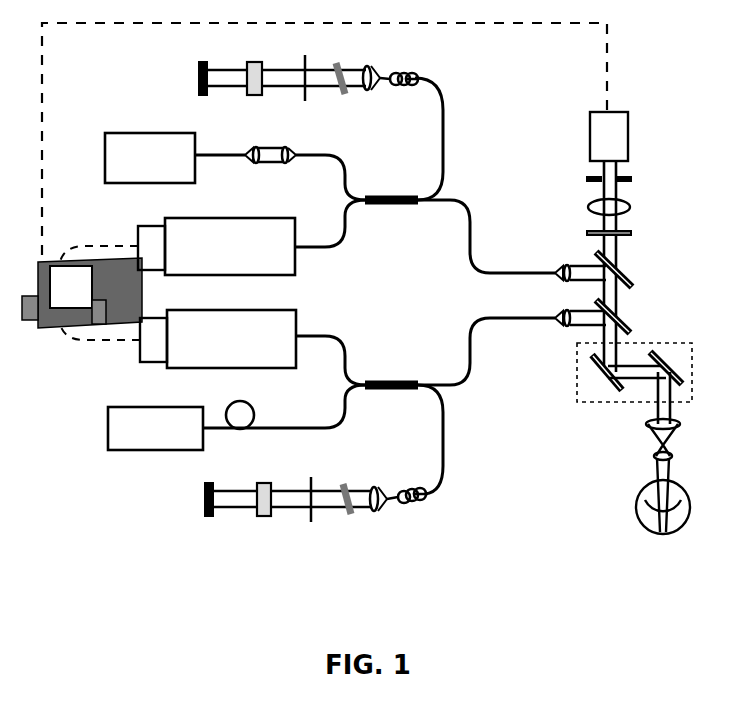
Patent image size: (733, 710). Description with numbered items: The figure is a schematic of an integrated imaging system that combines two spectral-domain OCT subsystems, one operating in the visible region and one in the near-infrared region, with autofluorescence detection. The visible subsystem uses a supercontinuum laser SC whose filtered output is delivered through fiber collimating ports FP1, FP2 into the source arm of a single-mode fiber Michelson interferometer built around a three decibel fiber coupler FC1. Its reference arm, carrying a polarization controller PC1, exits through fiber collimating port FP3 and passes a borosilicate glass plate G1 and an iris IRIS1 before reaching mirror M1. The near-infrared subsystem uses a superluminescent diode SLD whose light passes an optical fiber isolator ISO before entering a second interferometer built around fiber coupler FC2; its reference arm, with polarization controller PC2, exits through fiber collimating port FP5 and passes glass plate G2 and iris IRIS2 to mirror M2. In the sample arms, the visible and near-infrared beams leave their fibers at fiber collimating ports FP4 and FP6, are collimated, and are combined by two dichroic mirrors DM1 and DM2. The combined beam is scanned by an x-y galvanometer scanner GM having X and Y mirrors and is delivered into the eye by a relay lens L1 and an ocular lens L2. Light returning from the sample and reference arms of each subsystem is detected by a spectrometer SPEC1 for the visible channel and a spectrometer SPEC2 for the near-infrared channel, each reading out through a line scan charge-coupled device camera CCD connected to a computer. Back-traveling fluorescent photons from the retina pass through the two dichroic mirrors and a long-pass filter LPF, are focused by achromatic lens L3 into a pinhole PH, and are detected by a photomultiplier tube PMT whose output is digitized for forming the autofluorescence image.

The mirror M1 is at (209, 66).
The BK-7 glass plate G1 is at (256, 66).
The iris IRIS1 is at (306, 69).
The fiber collimating port FP3 is at (361, 65).
The polarization controller PC1 is at (399, 99).
The supercontinuum laser source SC is at (150, 158).
The fiber collimating port FP1 is at (241, 171).
The fiber collimating port FP2 is at (289, 171).
The spectrometer SPEC1 is at (230, 246).
The line scan charge-coupled device camera CCD is at (155, 294).
The 3 dB fiber coupler FC1 is at (391, 213).
The fiber collimating port FP4 is at (545, 284).
The spectrometer SPEC2 is at (231, 339).
The superluminescent diode SLD is at (155, 428).
The optical fiber isolator ISO is at (238, 406).
The 3 dB fiber coupler FC2 is at (391, 373).
The fiber collimating port FP6 is at (545, 329).
The mirror M2 is at (209, 517).
The BK-7 glass plate G2 is at (264, 517).
The iris IRIS2 is at (315, 514).
The fiber collimating port FP5 is at (371, 517).
The polarization controller PC2 is at (407, 484).
The photomultiplier tube module PMT is at (609, 136).
The pinhole PH is at (627, 180).
The achromatic lens L3 is at (591, 208).
The long-pass filter LPF is at (631, 234).
The dichroic mirror DM2 is at (640, 269).
The dichroic mirror DM1 is at (640, 316).
The x-y galvanometer scanner GM is at (616, 372).
The x scanning mirror X is at (605, 372).
The y scanning mirror Y is at (666, 365).
The relay lens L1 is at (648, 425).
The ocular lens L2 is at (644, 458).